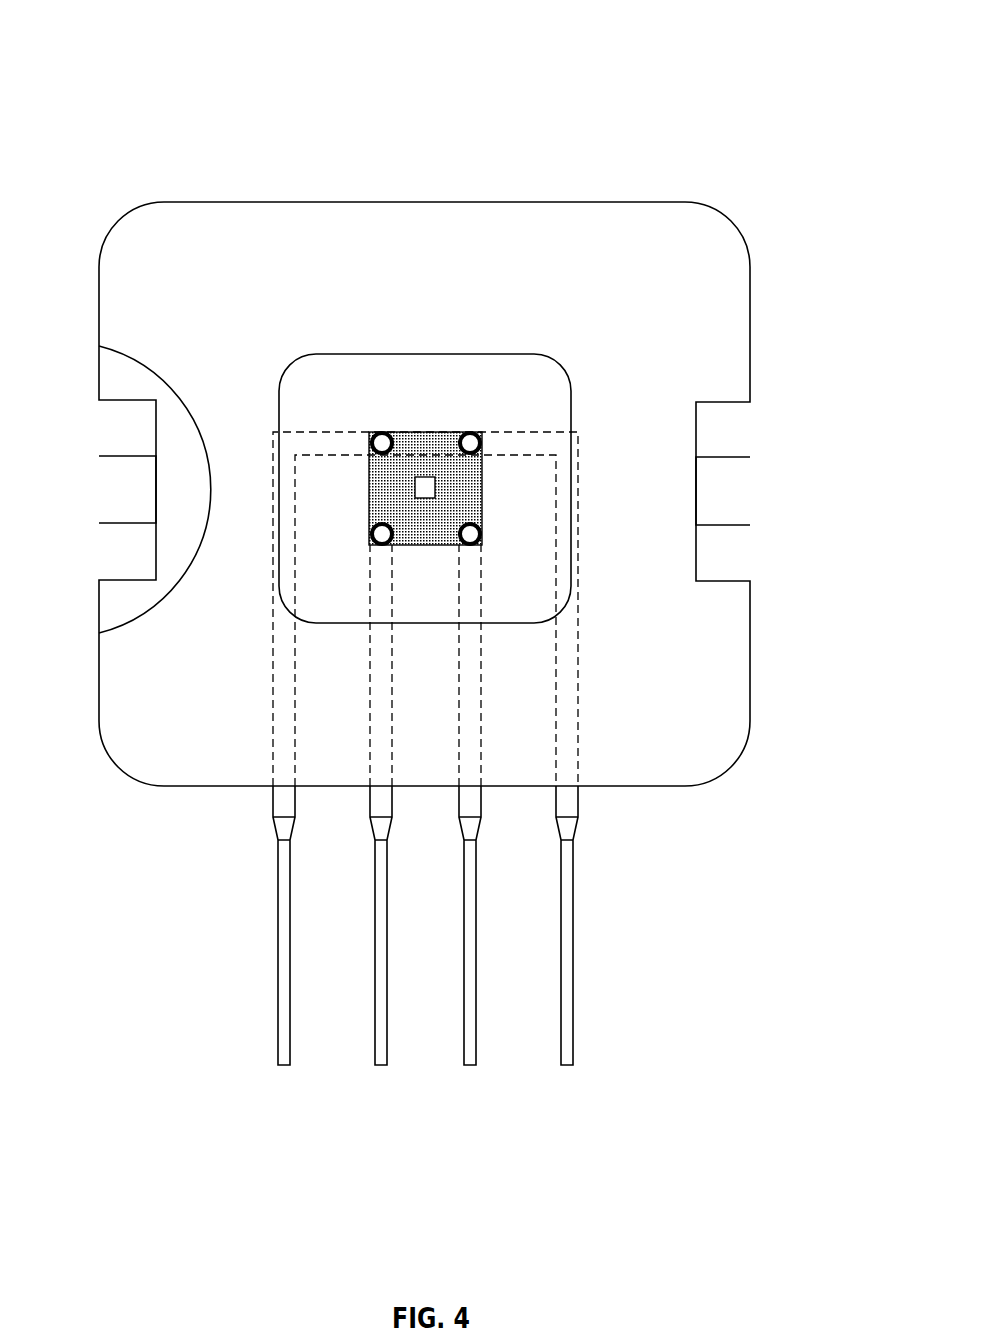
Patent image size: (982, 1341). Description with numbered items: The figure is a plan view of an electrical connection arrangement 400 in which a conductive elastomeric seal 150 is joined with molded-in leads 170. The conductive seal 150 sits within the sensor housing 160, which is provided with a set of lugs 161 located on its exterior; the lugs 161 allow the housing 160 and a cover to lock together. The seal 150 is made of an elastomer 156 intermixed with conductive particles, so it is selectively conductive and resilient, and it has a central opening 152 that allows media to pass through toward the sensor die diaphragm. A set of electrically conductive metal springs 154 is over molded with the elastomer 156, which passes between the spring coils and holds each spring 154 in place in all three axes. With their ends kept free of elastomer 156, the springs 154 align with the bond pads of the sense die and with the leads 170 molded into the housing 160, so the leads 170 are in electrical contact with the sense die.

The electrical connection arrangement 400 is at (702, 75).
The sensor housing 160 is at (405, 202).
The lugs 161 is at (100, 482).
The conductive elastomeric seal 150 is at (407, 432).
The central opening 152 is at (433, 488).
The conductive springs 154 is at (475, 430).
The elastomer 156 is at (368, 487).
The molded-in leads 170 is at (575, 930).